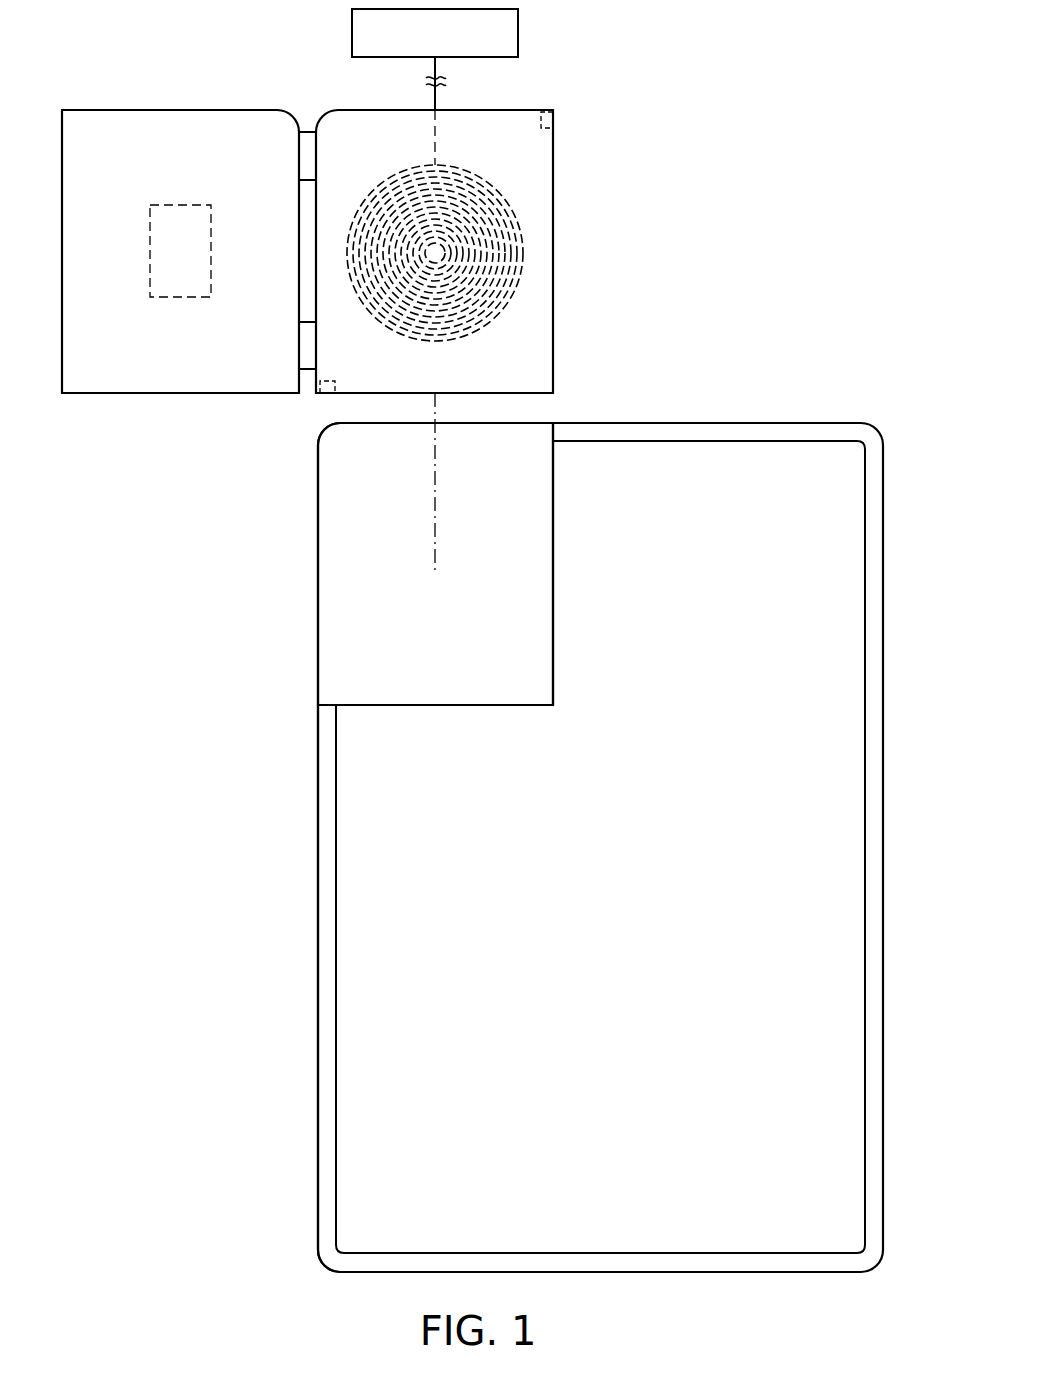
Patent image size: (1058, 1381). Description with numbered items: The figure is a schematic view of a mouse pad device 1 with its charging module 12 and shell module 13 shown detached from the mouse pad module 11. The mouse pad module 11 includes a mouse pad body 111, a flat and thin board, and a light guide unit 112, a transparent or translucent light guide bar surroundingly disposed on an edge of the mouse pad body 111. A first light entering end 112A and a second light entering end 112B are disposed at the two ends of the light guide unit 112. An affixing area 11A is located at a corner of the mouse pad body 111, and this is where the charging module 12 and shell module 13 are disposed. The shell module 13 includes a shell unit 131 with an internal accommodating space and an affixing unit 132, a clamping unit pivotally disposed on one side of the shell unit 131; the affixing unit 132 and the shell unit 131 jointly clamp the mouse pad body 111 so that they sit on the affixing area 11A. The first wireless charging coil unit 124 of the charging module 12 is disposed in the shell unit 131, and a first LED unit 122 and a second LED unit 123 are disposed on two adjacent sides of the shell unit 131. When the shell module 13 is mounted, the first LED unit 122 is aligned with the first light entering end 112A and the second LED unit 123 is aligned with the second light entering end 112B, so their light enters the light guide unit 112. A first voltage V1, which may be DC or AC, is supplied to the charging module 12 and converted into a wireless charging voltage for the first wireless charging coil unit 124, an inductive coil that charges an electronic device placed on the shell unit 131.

The mouse pad device 1 is at (780, 98).
The mouse pad module 11 is at (793, 423).
The affixing area 11A is at (338, 545).
The mouse pad body 111 is at (375, 977).
The light guide unit 112 is at (325, 1078).
The first light entering end 112A is at (553, 432).
The second light entering end 112B is at (328, 705).
The charging module 12 is at (636, 105).
The first LED unit 122 is at (555, 120).
The second LED unit 123 is at (327, 393).
The first wireless charging coil unit 124 is at (523, 222).
The shell module 13 is at (200, 50).
The shell unit 131 is at (375, 128).
The affixing unit 132 is at (195, 136).
The first voltage V1 is at (520, 33).